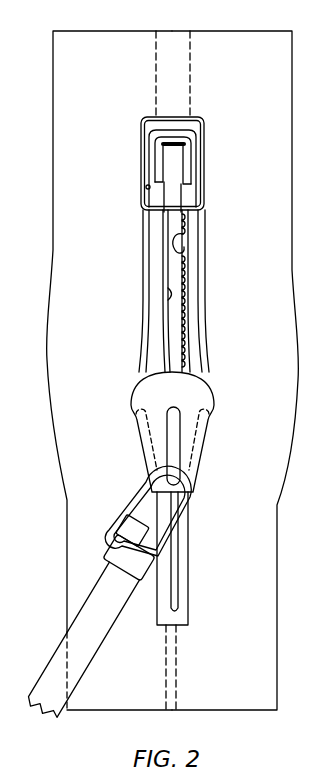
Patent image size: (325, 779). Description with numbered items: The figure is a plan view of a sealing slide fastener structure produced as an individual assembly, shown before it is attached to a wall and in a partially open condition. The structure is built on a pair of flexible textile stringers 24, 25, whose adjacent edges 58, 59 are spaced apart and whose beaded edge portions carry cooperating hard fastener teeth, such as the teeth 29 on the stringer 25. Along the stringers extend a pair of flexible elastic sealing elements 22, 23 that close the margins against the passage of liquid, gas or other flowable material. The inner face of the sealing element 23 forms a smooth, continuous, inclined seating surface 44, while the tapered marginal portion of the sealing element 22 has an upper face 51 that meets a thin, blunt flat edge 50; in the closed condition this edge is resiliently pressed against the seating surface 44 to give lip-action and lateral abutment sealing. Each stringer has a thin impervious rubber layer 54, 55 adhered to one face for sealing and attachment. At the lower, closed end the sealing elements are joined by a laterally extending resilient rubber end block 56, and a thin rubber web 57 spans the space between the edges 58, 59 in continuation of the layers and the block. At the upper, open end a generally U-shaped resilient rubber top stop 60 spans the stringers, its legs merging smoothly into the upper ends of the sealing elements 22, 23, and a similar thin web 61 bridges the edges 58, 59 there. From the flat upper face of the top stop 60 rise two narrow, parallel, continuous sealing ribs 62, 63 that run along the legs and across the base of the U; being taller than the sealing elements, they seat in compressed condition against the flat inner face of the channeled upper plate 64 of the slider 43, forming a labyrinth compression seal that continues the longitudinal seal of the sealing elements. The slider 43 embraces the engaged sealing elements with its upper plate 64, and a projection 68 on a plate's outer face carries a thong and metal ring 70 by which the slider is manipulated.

The sealing element 22 is at (148, 340).
The sealing element 23 is at (202, 345).
The stringer 24 is at (66, 528).
The stringer 25 is at (278, 552).
The fastener elements or teeth 29 is at (182, 240).
The slider 43 is at (140, 438).
The seating surface 44 is at (188, 268).
The flat edge 50 is at (167, 297).
The upper face 51 is at (164, 273).
The impervious layer 54 is at (82, 558).
The impervious layer 55 is at (253, 578).
The end block 56 is at (177, 618).
The web 57 is at (172, 705).
The edge 58 is at (155, 63).
The edge 59 is at (193, 90).
The top stop 60 is at (203, 128).
The web 61 is at (168, 43).
The sealing rib 62 is at (155, 163).
The sealing rib 63 is at (146, 187).
The channeled upper plate 64 is at (187, 432).
The projection 68 is at (172, 452).
The metal ring 70 is at (137, 490).